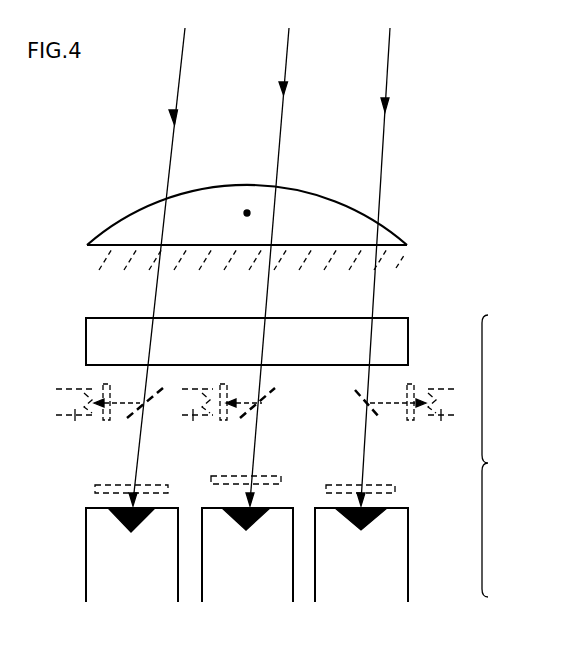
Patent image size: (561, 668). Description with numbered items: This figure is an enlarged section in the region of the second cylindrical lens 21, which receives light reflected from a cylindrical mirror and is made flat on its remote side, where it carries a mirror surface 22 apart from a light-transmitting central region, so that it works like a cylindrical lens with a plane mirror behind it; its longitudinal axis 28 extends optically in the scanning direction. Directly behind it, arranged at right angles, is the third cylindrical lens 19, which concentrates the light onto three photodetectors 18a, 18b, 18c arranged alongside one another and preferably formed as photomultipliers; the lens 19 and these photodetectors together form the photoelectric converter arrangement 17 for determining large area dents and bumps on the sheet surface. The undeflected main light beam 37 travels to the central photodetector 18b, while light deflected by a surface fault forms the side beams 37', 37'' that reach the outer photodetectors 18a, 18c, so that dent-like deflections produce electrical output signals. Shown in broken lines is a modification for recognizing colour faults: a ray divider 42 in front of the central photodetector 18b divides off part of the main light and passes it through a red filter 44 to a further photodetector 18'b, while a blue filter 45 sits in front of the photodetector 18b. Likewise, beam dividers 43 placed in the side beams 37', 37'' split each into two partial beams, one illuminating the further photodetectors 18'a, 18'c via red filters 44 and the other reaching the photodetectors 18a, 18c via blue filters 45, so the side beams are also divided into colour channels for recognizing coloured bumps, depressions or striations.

The photoelectric converter arrangement 17 is at (501, 456).
The photodetector 18a is at (130, 578).
The photodetector 18b is at (257, 590).
The photodetector 18c is at (392, 586).
The further photodetector 18'a is at (69, 422).
The further photodetector 18'b is at (213, 424).
The further photodetector 18'c is at (451, 422).
The third cylindrical lens 19 is at (401, 327).
The second cylindrical lens 21 is at (141, 218).
The mirror surface 22 is at (100, 258).
The longitudinal axis 28 is at (244, 213).
The main light beam 37 is at (292, 267).
The deflected side beam 37' is at (401, 267).
The deflected side beam 37'' is at (151, 267).
The ray divider 42 is at (272, 390).
The beam divider 43 is at (148, 418).
The red filter 44 is at (101, 382).
The blue filter 45 is at (94, 489).